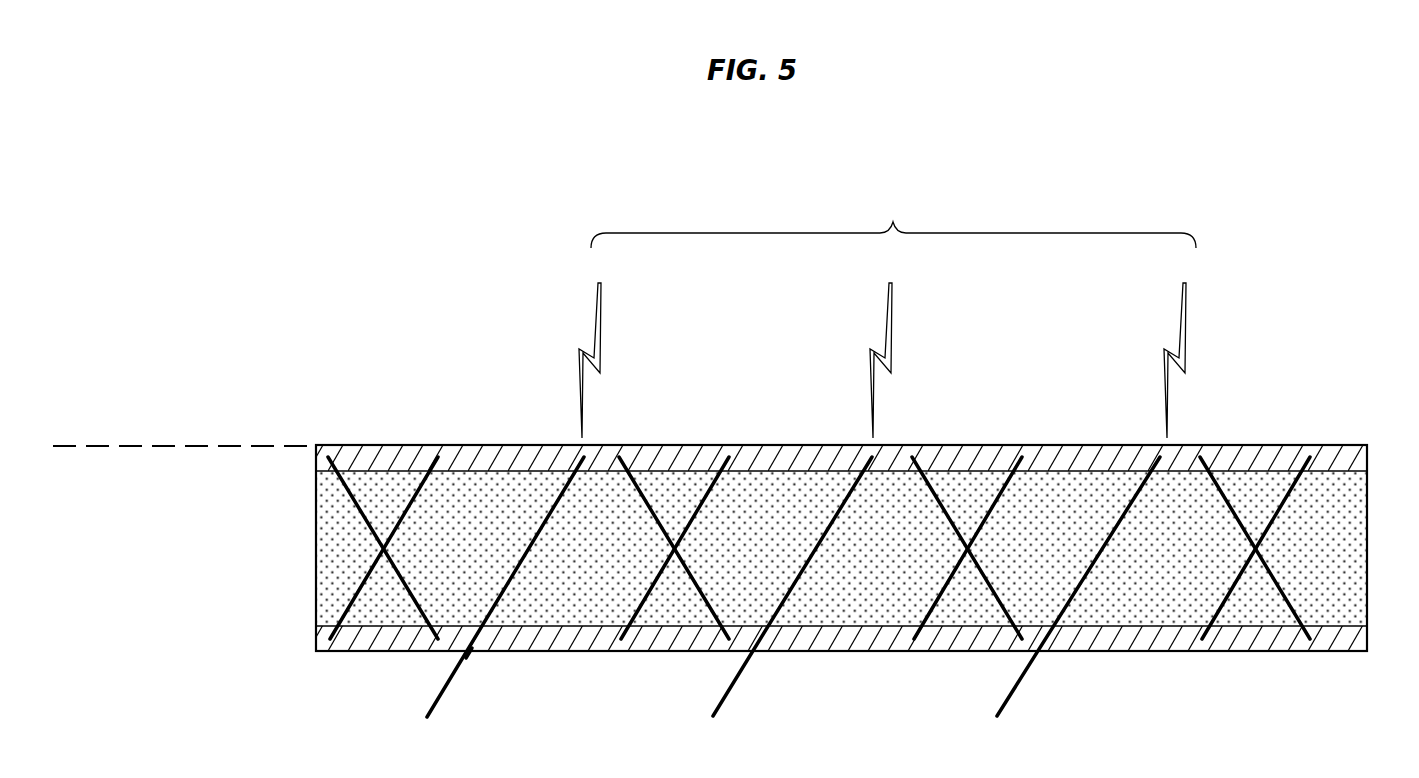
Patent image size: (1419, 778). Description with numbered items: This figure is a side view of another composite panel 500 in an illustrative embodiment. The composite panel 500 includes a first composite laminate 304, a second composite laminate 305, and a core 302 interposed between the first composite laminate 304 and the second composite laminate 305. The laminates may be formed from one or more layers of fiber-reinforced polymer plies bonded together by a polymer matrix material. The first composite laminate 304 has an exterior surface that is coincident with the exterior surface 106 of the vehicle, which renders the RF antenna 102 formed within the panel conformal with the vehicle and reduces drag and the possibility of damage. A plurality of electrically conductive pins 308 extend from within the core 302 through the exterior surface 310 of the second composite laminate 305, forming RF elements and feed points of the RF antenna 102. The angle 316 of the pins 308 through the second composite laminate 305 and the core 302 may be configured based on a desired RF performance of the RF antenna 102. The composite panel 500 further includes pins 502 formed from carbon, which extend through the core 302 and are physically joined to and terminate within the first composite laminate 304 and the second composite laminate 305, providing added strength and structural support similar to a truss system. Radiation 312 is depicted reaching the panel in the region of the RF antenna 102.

The composite panel 500 is at (325, 170).
The RF antenna 102 is at (893, 220).
The radiation / heat input 312 is at (583, 358).
The exterior surface of vehicle 106 is at (166, 435).
The first composite laminate 304 is at (368, 445).
The second composite laminate 305 is at (380, 641).
The core 302 is at (335, 560).
The pins 502 is at (335, 480).
The pins 308 is at (440, 693).
The angle 316 is at (468, 653).
The exterior surface 310 is at (908, 684).